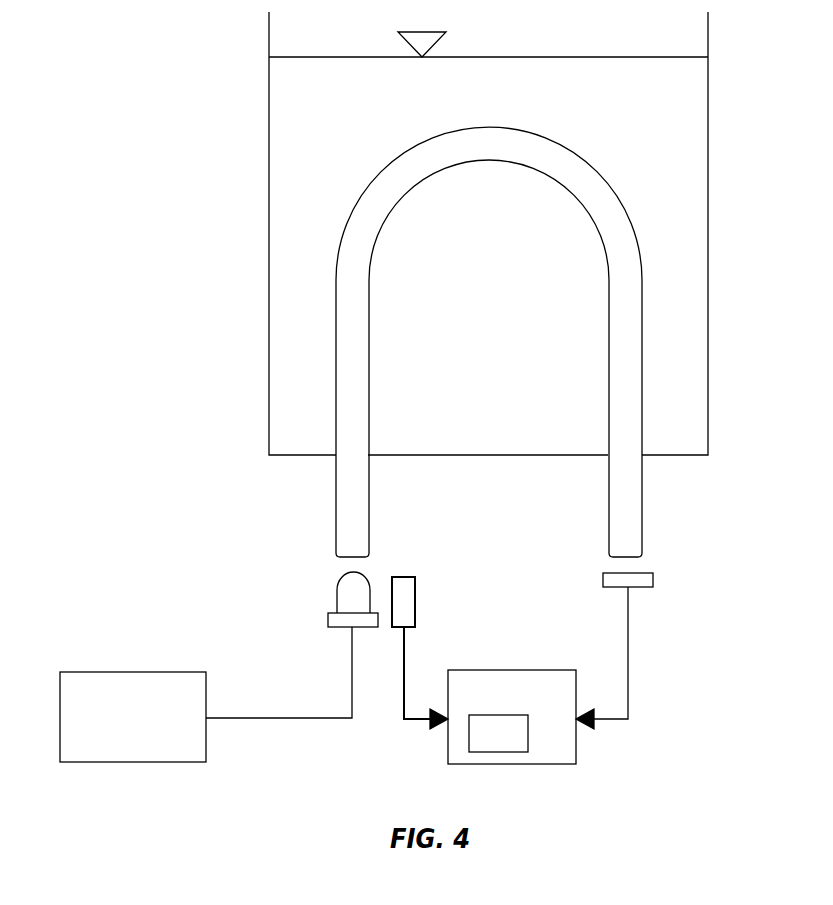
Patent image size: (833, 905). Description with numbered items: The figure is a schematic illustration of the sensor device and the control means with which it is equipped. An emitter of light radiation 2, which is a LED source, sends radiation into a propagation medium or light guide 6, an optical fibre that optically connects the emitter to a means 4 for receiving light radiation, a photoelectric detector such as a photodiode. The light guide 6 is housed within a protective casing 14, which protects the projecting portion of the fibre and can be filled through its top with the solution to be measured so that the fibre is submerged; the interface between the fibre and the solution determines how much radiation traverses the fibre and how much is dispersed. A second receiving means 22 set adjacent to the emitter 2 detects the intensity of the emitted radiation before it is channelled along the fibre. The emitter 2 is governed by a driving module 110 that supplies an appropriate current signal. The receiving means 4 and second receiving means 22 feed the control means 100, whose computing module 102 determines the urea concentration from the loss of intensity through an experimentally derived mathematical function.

The protective casing 14 is at (711, 120).
The propagation medium or light guide 6 is at (630, 321).
The emitter of light radiation 2 is at (348, 596).
The means for receiving light radiation 4 is at (415, 593).
The second receiving means 22 is at (650, 578).
The control means 100 is at (567, 745).
The computing module 102 is at (484, 739).
The driving module 110 is at (125, 695).